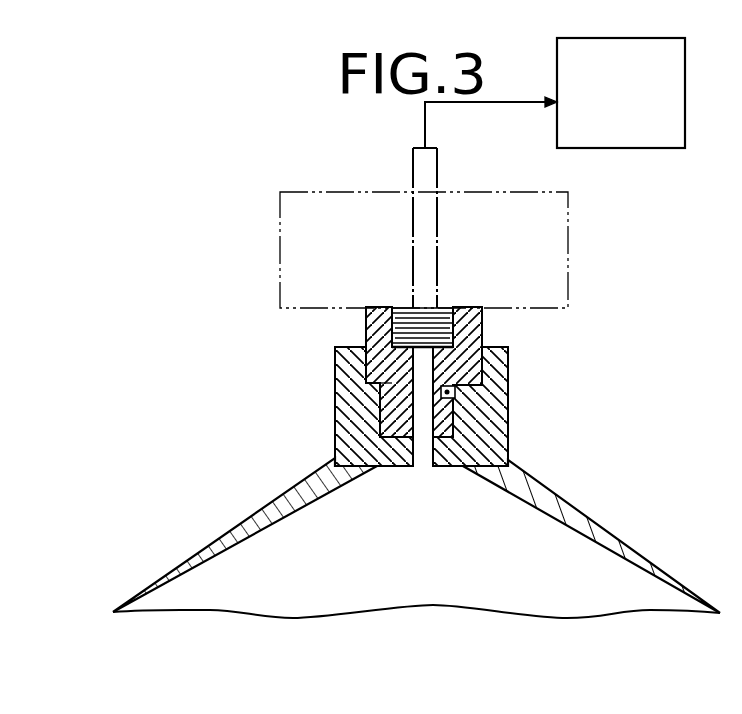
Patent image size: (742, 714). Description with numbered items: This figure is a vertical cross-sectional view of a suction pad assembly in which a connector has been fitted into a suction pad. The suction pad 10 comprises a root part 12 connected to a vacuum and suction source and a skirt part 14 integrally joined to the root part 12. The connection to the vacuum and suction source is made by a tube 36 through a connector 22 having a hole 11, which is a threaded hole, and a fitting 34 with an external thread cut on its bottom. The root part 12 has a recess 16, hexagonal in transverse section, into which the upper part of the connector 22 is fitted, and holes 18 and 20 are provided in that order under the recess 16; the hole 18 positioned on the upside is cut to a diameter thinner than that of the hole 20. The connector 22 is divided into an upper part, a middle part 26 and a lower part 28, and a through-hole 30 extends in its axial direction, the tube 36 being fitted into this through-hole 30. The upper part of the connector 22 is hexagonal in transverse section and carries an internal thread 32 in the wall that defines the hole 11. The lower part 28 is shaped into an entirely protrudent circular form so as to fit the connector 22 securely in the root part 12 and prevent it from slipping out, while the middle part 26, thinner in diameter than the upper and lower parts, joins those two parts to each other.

The suction pad 10 is at (573, 493).
The hole 11 is at (412, 308).
The root part 12 is at (335, 418).
The skirt part 14 is at (243, 527).
The recess 16 is at (482, 365).
The hole 18 is at (465, 397).
The hole 20 is at (465, 425).
The connector 22 is at (387, 367).
The middle part 26 is at (380, 398).
The lower part 28 is at (375, 432).
The through-hole 30 is at (423, 467).
The internal thread 32 is at (460, 332).
The fitting 34 is at (568, 227).
The tube 36 is at (437, 167).